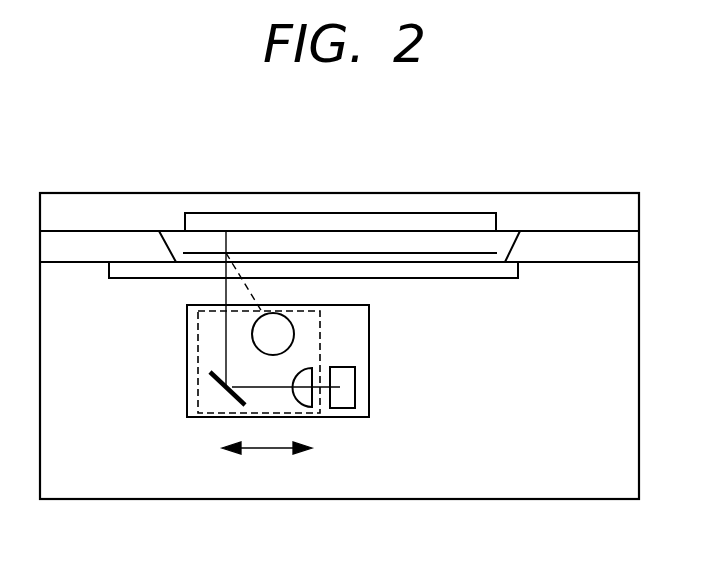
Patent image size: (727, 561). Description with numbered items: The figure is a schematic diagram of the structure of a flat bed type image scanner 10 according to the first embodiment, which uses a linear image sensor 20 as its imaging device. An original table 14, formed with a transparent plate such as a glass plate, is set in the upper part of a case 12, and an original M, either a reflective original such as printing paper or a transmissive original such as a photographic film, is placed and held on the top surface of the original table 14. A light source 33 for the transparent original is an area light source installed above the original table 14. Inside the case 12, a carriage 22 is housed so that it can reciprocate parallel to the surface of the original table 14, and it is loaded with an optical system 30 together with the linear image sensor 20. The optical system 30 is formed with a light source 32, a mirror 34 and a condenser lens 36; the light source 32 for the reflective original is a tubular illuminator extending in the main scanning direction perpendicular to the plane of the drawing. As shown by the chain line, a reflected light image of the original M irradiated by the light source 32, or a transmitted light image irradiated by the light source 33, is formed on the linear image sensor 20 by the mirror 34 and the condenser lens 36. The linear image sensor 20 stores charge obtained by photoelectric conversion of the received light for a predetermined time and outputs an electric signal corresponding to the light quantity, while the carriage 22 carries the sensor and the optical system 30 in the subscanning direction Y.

The image scanner 10 is at (123, 168).
The case 12 is at (127, 500).
The original table 14 is at (141, 270).
The linear image sensor 20 is at (342, 383).
The carriage 22 is at (187, 405).
The optical system 30 is at (187, 339).
The light source 32 is at (278, 329).
The light source 33 is at (315, 219).
The mirror 34 is at (226, 386).
The condenser lens 36 is at (305, 368).
The original M is at (427, 252).
The subscanning direction Y is at (267, 460).